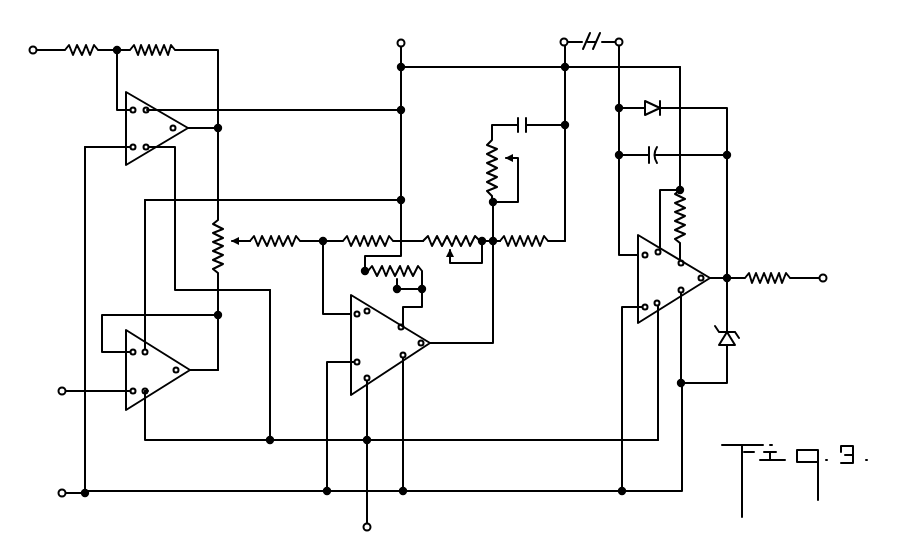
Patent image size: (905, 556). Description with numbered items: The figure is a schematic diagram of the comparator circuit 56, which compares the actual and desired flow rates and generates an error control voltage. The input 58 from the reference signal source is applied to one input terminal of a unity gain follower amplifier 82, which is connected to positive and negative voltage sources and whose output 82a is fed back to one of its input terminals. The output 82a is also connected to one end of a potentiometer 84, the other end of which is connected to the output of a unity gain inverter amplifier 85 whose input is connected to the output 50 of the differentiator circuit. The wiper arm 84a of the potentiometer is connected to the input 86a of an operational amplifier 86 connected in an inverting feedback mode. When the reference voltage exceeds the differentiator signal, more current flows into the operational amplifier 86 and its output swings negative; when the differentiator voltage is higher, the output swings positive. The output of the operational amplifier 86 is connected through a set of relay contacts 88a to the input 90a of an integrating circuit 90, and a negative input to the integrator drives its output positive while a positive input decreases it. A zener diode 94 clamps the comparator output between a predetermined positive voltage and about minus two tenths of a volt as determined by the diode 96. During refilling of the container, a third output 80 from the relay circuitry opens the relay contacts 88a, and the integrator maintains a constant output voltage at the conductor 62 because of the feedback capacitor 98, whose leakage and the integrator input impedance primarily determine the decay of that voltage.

The output of the differentiator circuit 50 is at (47, 48).
The comparator circuit 56 is at (312, 90).
The input from the reference signal source 58 is at (93, 381).
The conductor 62 is at (826, 270).
The third output from the relay circuitry 80 is at (579, 77).
The unity gain follower amplifier 82 is at (162, 390).
The output of the unity gain follower amplifier 82a is at (217, 373).
The potentiometer 84 is at (229, 262).
The wiper arm of the potentiometer 84a is at (240, 240).
The unity gain inverter amplifier 85 is at (142, 100).
The operational amplifier 86 is at (417, 350).
The input of the operational amplifier 86a is at (323, 318).
The relay contacts 88a is at (600, 36).
The integrating circuit 90 is at (634, 290).
The input of the integrating circuit 90a is at (620, 240).
The zener diode 94 is at (742, 334).
The diode 96 is at (660, 100).
The feedback capacitor 98 is at (657, 150).